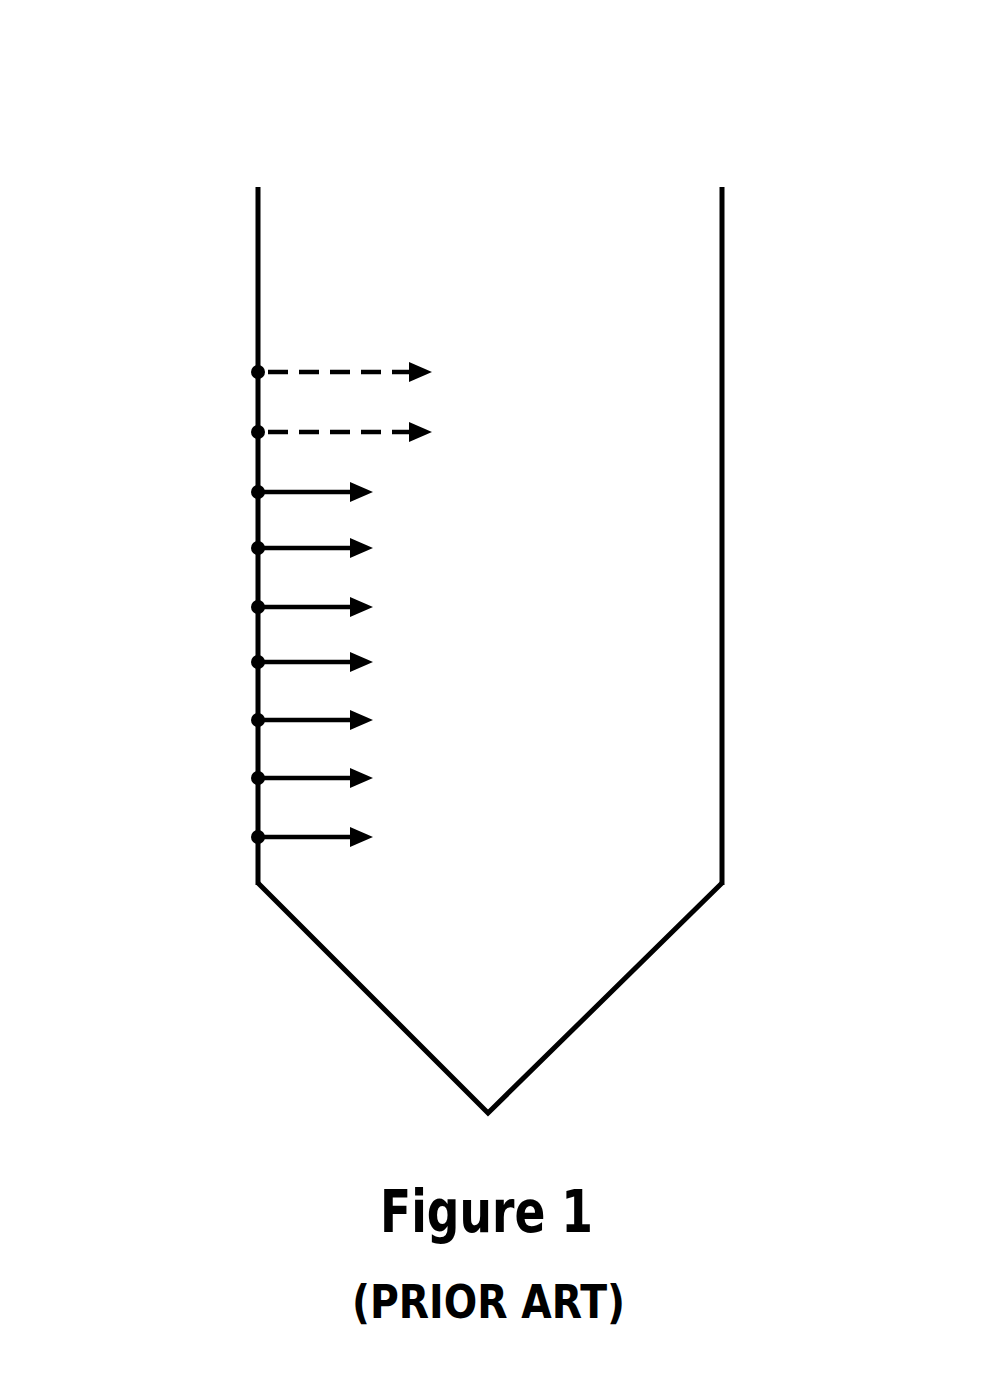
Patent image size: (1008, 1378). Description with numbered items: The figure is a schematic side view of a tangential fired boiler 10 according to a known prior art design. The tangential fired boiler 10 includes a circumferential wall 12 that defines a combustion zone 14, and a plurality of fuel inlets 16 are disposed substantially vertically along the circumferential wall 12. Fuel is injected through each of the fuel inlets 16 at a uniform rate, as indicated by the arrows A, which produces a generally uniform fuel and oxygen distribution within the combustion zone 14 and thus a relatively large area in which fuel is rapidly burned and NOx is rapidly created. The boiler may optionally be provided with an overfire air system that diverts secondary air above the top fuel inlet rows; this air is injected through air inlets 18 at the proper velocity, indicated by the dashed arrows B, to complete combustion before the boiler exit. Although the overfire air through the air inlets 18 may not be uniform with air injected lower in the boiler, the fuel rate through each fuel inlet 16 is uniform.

The tangential fired boiler 10 is at (554, 118).
The circumferential wall 12 is at (257, 252).
The combustion zone 14 is at (633, 456).
The fuel inlets 16 is at (258, 662).
The air inlets 18 is at (258, 372).
The arrows A is at (373, 672).
The dashed arrows B is at (440, 433).